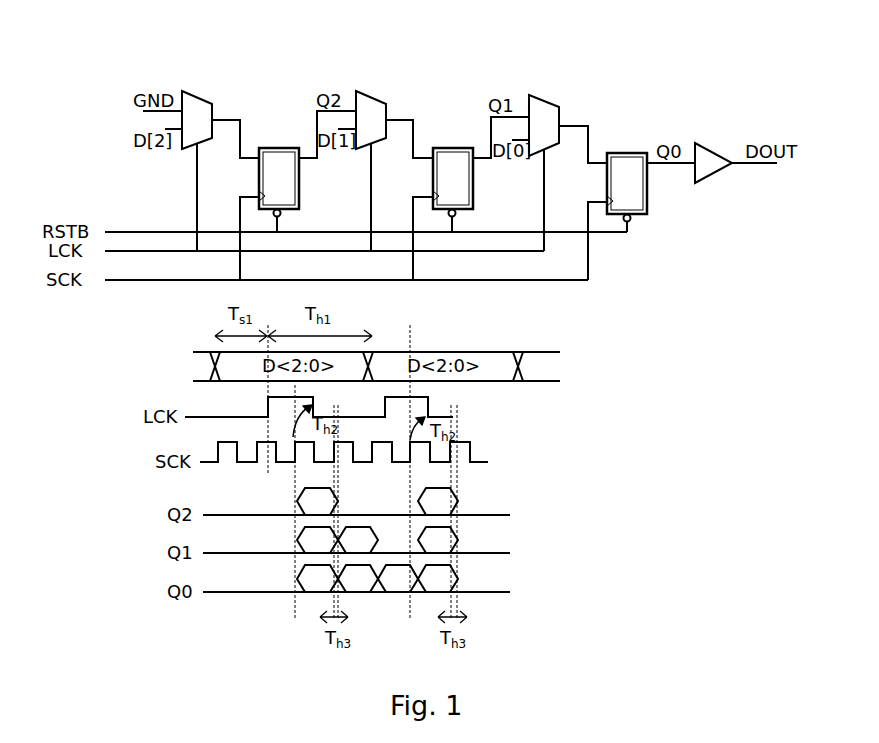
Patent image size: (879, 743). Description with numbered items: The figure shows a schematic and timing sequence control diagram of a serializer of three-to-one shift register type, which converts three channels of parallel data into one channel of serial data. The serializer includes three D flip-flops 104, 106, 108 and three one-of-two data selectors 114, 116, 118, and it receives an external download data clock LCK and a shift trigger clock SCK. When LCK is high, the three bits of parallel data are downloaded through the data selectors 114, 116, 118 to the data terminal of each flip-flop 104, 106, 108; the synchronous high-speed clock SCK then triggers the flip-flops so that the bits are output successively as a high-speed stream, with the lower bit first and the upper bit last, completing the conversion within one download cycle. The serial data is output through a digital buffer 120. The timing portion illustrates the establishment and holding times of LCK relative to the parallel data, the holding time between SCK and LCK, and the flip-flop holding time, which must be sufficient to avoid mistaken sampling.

The D flip-flop 104 is at (273, 147).
The D flip-flop 106 is at (445, 147).
The D flip-flop 108 is at (623, 152).
The one-of-two data selector 114 is at (190, 88).
The one-of-two data selector 116 is at (361, 88).
The one-of-two data selector 118 is at (545, 93).
The digital buffer 120 is at (700, 142).